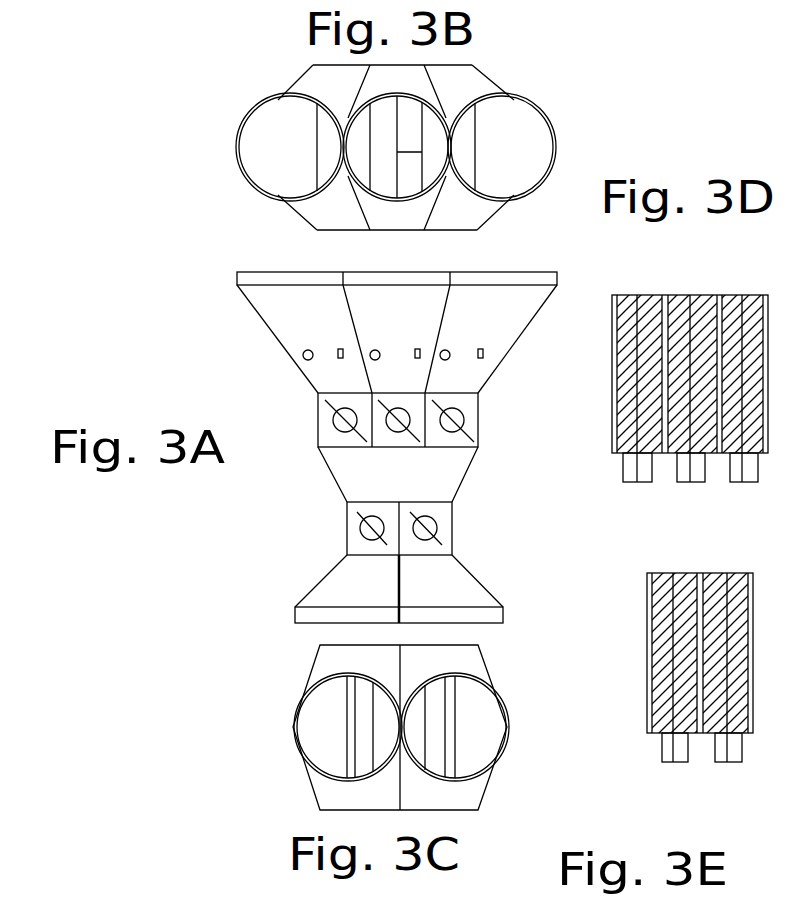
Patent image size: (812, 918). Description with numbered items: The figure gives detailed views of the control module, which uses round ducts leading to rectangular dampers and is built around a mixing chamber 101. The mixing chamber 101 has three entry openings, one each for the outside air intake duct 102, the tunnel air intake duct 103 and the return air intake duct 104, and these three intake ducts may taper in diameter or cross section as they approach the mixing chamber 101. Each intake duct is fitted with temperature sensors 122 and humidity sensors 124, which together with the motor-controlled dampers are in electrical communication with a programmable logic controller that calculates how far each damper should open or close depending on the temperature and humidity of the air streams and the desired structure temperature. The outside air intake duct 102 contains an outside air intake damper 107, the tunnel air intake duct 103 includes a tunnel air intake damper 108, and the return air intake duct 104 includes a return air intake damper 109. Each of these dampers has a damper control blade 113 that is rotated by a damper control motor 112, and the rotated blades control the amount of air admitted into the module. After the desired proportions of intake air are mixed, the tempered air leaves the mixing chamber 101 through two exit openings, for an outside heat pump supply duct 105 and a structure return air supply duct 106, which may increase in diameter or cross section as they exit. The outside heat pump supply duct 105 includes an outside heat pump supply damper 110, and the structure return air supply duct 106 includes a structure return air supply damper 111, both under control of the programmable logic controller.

In FIG. 3A, the mixing chamber 101 is at (410, 482).
In FIG. 3B, the outside air intake duct 102 is at (303, 159).
In FIG. 3A, the outside air intake duct 102 is at (299, 318).
In FIG. 3B, the tunnel air intake duct 103 is at (397, 147).
In FIG. 3A, the tunnel air intake duct 103 is at (408, 318).
In FIG. 3B, the return air intake duct 104 is at (525, 154).
In FIG. 3A, the return air intake duct 104 is at (525, 315).
In FIG. 3A, the outside heat pump supply duct 105 is at (372, 596).
In FIG. 3C, the outside heat pump supply duct 105 is at (335, 739).
In FIG. 3A, the structure return air supply duct 106 is at (455, 606).
In FIG. 3C, the structure return air supply duct 106 is at (490, 739).
In FIG. 3A, the outside air intake damper 107 is at (317, 412).
In FIG. 3A, the tunnel air intake damper 108 is at (383, 447).
In FIG. 3A, the return air intake damper 109 is at (464, 420).
In FIG. 3A, the outside heat pump supply damper 110 is at (347, 555).
In FIG. 3A, the structure return air supply damper 111 is at (493, 543).
In FIG. 3A, the damper control motor 112 is at (442, 545).
In FIG. 3D, the damper control motor 112 is at (742, 483).
In FIG. 3E, the damper control motor 112 is at (673, 762).
In FIG. 3A, the damper control blade 113 is at (433, 519).
In FIG. 3D, the damper control blade 113 is at (633, 393).
In FIG. 3E, the damper control blade 113 is at (658, 648).
In FIG. 3A, the temperature sensors 122 is at (480, 349).
In FIG. 3A, the humidity sensors 124 is at (311, 351).